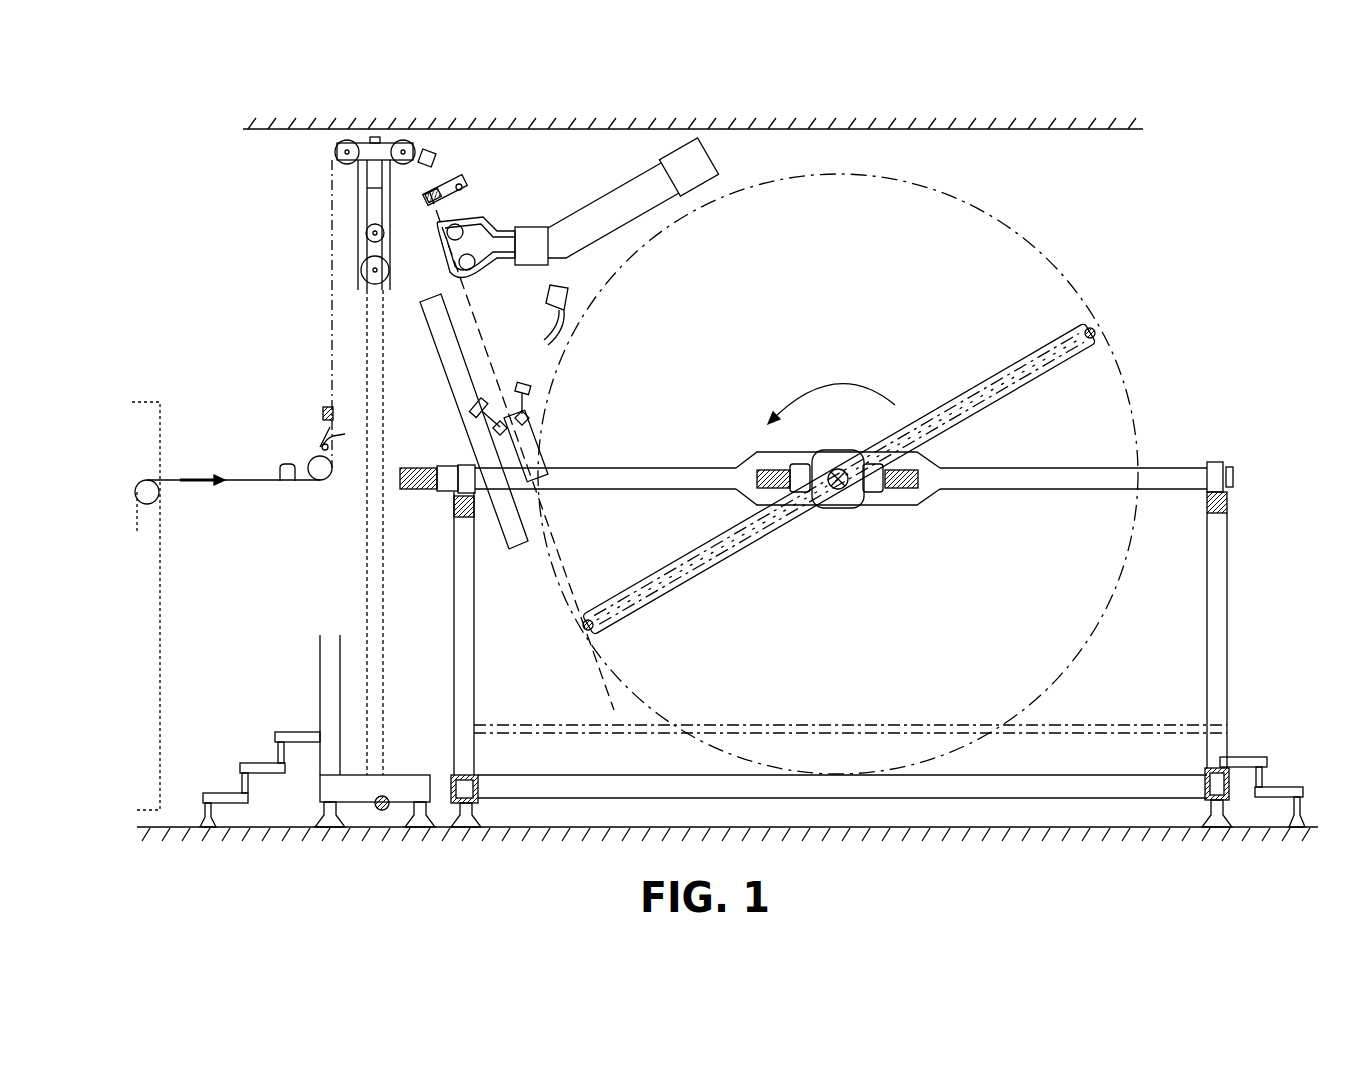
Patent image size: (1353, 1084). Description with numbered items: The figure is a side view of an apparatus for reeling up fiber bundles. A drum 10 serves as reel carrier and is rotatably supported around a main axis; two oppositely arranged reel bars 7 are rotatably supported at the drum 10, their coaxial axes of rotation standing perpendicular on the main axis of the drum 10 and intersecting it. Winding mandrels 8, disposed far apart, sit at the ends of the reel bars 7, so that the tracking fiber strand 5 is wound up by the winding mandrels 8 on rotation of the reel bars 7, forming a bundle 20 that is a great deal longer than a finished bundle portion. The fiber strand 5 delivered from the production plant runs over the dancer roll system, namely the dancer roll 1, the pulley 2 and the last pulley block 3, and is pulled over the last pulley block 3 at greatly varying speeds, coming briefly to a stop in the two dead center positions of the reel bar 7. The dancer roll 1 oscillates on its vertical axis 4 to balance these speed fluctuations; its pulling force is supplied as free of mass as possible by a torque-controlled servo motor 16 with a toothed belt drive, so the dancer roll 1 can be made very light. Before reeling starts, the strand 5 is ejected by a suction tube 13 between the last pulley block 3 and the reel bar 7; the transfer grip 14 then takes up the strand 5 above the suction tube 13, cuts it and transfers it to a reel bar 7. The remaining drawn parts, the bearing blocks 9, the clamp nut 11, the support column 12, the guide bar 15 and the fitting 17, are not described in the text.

The dancer roll 1 is at (363, 270).
The dancer roll system pulley 2 is at (337, 150).
The last pulley block 3 is at (400, 142).
The vertical axis 4 is at (372, 588).
The fiber strand 5 is at (568, 567).
The reel bar 7 is at (763, 546).
The winding mandrel 8 is at (1090, 340).
The bearing blocks 9 is at (762, 468).
The drum 10 is at (945, 466).
The shaft clamp nut 11 is at (445, 492).
The support column 12 is at (476, 660).
The suction tube 13 is at (578, 228).
The transfer grip 14 is at (532, 402).
The guide bar 15 is at (453, 374).
The servo motor 16 is at (382, 812).
The fastening fitting 17 is at (432, 171).
The bundle 20 is at (702, 592).